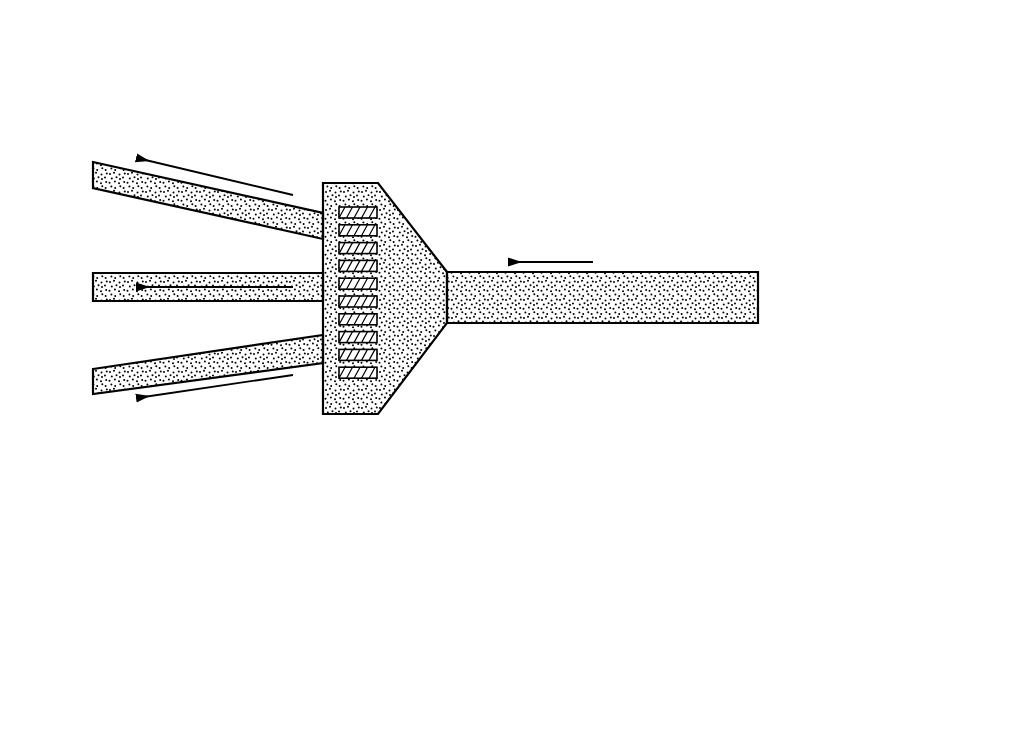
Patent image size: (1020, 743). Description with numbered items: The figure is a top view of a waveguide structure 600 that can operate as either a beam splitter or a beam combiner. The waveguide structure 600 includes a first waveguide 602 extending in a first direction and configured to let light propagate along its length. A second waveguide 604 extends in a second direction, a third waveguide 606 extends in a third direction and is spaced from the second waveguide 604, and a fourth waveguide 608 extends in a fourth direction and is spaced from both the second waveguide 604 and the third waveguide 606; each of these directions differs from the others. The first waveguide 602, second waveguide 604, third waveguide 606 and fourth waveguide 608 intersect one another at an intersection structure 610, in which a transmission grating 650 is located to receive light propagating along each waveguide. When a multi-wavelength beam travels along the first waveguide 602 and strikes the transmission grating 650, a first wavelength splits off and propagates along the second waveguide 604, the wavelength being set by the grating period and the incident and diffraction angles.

The waveguide structure 600 is at (749, 80).
The first waveguide 602 is at (753, 298).
The second waveguide 604 is at (107, 172).
The third waveguide 606 is at (108, 282).
The fourth waveguide 608 is at (103, 385).
The intersection structure 610 is at (412, 247).
The transmission grating 650 is at (348, 377).